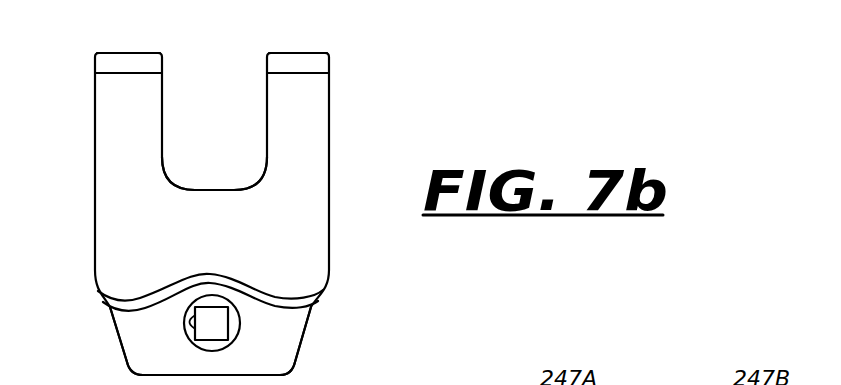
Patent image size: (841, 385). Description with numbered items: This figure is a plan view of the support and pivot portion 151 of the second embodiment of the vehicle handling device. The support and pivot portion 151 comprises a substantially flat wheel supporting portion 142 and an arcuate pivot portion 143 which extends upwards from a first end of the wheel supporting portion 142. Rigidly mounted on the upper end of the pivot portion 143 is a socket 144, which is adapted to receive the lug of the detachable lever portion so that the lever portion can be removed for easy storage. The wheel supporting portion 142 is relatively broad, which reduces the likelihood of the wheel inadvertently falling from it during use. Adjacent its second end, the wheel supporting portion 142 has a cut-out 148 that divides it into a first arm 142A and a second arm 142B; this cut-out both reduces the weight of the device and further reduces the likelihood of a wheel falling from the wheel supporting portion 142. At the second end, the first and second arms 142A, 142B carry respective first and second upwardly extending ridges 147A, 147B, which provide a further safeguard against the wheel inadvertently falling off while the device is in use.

The wheel supporting portion 142 is at (292, 220).
The first arm 142A is at (152, 100).
The second arm 142B is at (310, 102).
The arcuate pivot portion 143 is at (277, 349).
The socket 144 is at (207, 334).
The first upwardly extending ridge 147A is at (136, 65).
The second upwardly extending ridge 147B is at (327, 21).
The cut-out 148 is at (162, 128).
The support and pivot portion 151 is at (350, 70).